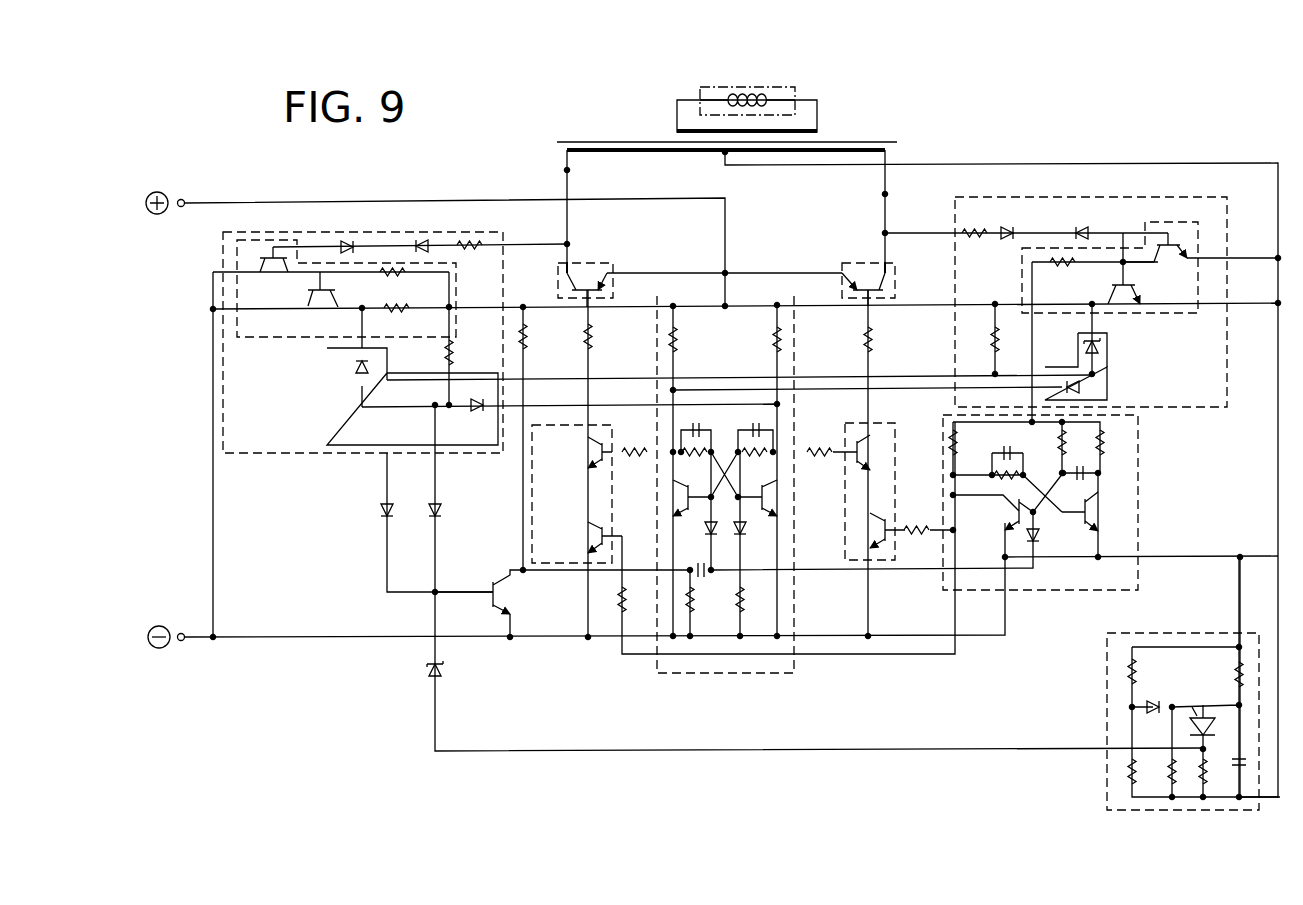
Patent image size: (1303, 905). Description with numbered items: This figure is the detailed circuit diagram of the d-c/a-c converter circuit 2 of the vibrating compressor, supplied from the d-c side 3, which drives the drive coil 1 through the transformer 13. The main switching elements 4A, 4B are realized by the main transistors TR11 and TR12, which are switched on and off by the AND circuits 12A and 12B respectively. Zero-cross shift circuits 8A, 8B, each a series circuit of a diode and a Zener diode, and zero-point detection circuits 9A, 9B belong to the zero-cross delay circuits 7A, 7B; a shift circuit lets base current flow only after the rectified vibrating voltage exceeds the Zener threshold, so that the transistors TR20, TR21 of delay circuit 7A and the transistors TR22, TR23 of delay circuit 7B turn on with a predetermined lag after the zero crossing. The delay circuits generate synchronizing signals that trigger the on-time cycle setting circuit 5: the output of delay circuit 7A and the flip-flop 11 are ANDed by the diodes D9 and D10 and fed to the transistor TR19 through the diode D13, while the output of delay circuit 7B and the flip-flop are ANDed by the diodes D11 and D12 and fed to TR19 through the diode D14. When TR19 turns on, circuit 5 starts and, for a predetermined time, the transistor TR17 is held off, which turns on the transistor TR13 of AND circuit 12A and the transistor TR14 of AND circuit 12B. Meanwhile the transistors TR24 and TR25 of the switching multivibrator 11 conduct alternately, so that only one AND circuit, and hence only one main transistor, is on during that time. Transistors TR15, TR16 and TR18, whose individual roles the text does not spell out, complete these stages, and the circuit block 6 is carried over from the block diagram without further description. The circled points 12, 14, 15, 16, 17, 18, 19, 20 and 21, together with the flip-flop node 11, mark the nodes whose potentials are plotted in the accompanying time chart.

The drive coil 1 is at (795, 93).
The d-c/a-c converter circuit 2 is at (1087, 160).
The d-c supply 3 is at (180, 208).
The main switching element 4A is at (593, 262).
The main switching element 4B is at (870, 262).
The on-time cycle setting circuit 5 is at (1138, 440).
The circuit block 6 is at (1107, 666).
The zero-cross delay circuit 7A is at (260, 453).
The zero-cross delay circuit 7B is at (1200, 407).
The zero-cross shift circuit 8A is at (406, 230).
The zero-cross shift circuit 8B is at (1076, 224).
The zero-point detection circuit 9A is at (265, 337).
The zero-point detection circuit 9B is at (1170, 313).
The switching multivibrator 11 is at (727, 673).
The circuit point 12 is at (778, 451).
The AND circuit 12A is at (612, 512).
The AND circuit 12B is at (893, 423).
The transformer 13 is at (876, 141).
The circuit point 14 is at (568, 172).
The circuit point 15 is at (885, 193).
The circuit point 16 is at (712, 496).
The circuit point 17 is at (357, 274).
The circuit point 18 is at (366, 310).
The circuit point 19 is at (1123, 247).
The circuit point 20 is at (1093, 305).
The circuit point 21 is at (523, 569).
The main transistor TR11 is at (604, 282).
The main transistor TR12 is at (866, 283).
The transistor TR13 is at (598, 530).
The transistor TR14 is at (882, 531).
The transistor TR15 is at (598, 446).
The transistor TR16 is at (861, 456).
The transistor TR17 is at (1012, 515).
The transistor TR18 is at (1092, 512).
The transistor TR19 is at (505, 594).
The transistor TR20 is at (275, 262).
The transistor TR21 is at (315, 298).
The transistor TR22 is at (1168, 248).
The transistor TR23 is at (1112, 286).
The transistor TR24 is at (686, 500).
The transistor TR25 is at (765, 494).
The diode D9 is at (360, 375).
The diode D10 is at (480, 412).
The diode D11 is at (1095, 358).
The diode D12 is at (1085, 375).
The diode D13 is at (441, 512).
The diode D14 is at (381, 512).